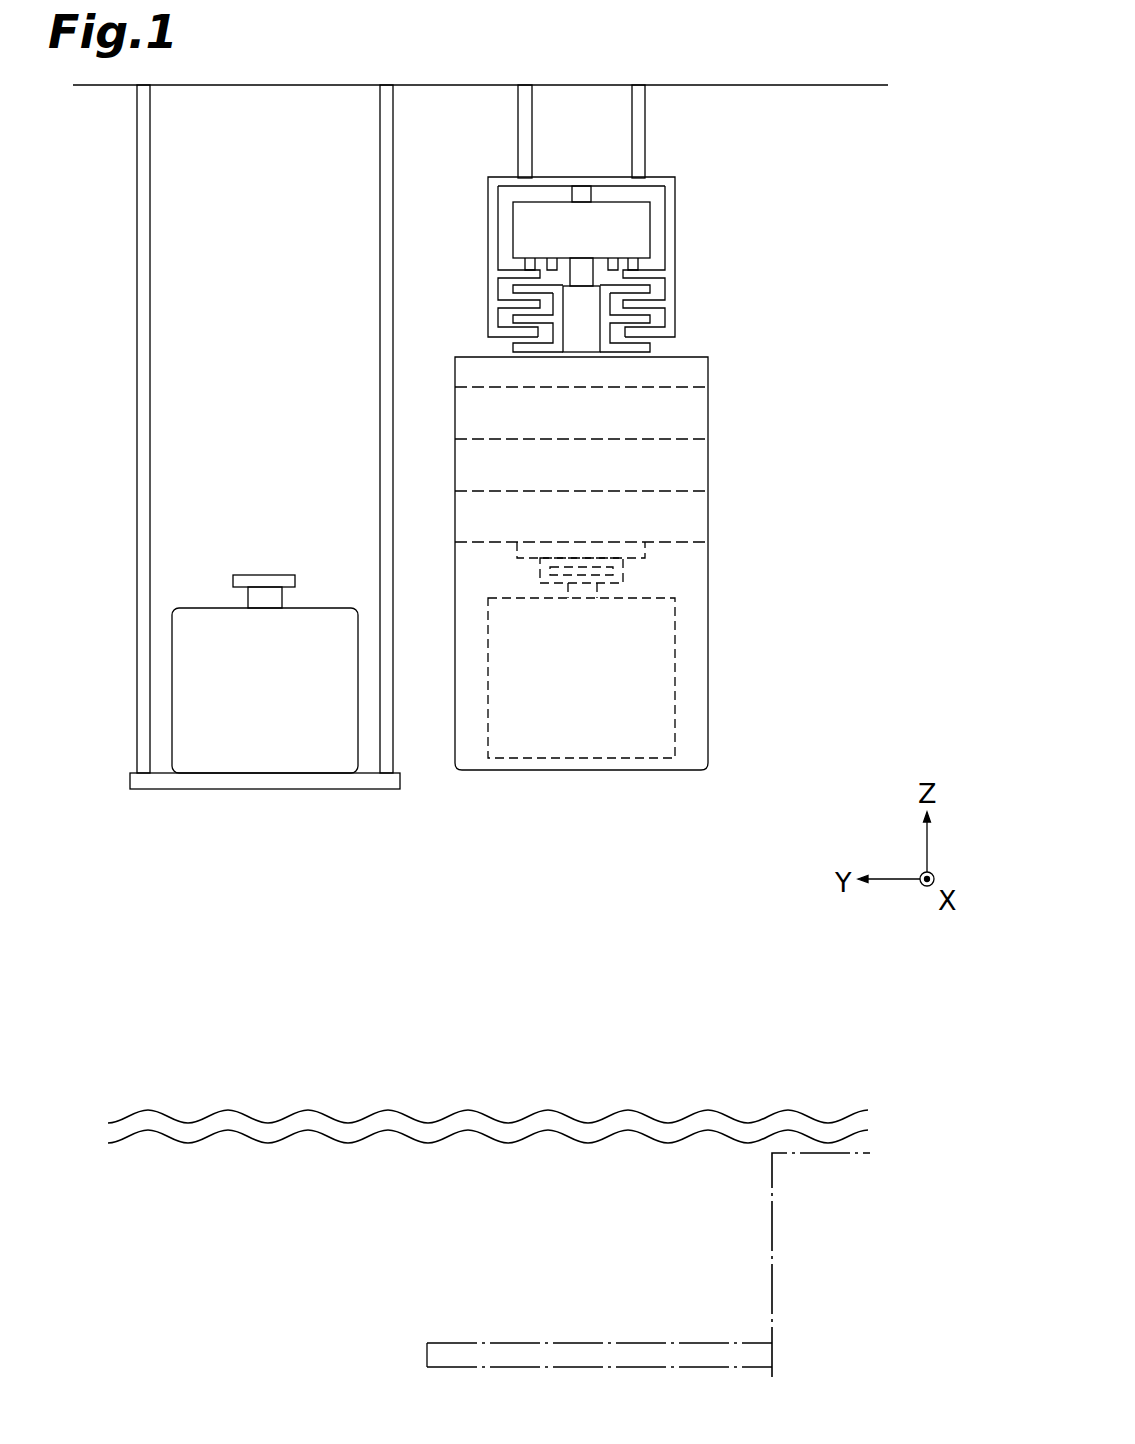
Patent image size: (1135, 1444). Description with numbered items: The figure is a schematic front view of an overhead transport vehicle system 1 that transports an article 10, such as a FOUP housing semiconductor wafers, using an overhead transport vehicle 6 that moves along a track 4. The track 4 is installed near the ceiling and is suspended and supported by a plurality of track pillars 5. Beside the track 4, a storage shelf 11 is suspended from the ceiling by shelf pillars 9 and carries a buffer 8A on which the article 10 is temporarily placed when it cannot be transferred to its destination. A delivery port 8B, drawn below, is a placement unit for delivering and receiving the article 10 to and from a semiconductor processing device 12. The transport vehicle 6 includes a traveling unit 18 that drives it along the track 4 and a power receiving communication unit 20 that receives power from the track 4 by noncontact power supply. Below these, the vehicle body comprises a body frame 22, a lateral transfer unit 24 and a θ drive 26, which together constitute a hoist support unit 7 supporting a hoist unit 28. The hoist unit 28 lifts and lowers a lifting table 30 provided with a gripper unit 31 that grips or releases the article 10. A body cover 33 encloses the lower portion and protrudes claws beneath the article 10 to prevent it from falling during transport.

The overhead transport vehicle system 1 is at (928, 95).
The track 4 is at (640, 264).
The track pillars 5 is at (518, 128).
The overhead transport vehicle 6 is at (693, 524).
The hoist support unit 7 is at (642, 424).
The buffer 8A is at (310, 789).
The delivery port 8B is at (500, 1343).
The shelf pillars 9 is at (145, 373).
The article 10 is at (318, 610).
The storage shelf 11 is at (254, 496).
The semiconductor processing device 12 is at (780, 1217).
The traveling unit 18 is at (653, 210).
The power receiving communication unit 20 is at (585, 322).
The body frame 22 is at (693, 373).
The lateral transfer unit 24 is at (693, 417).
The θ drive 26 is at (626, 475).
The hoist unit 28 is at (693, 518).
The lifting table 30 is at (650, 555).
The gripper unit 31 is at (625, 570).
The body cover 33 is at (697, 722).